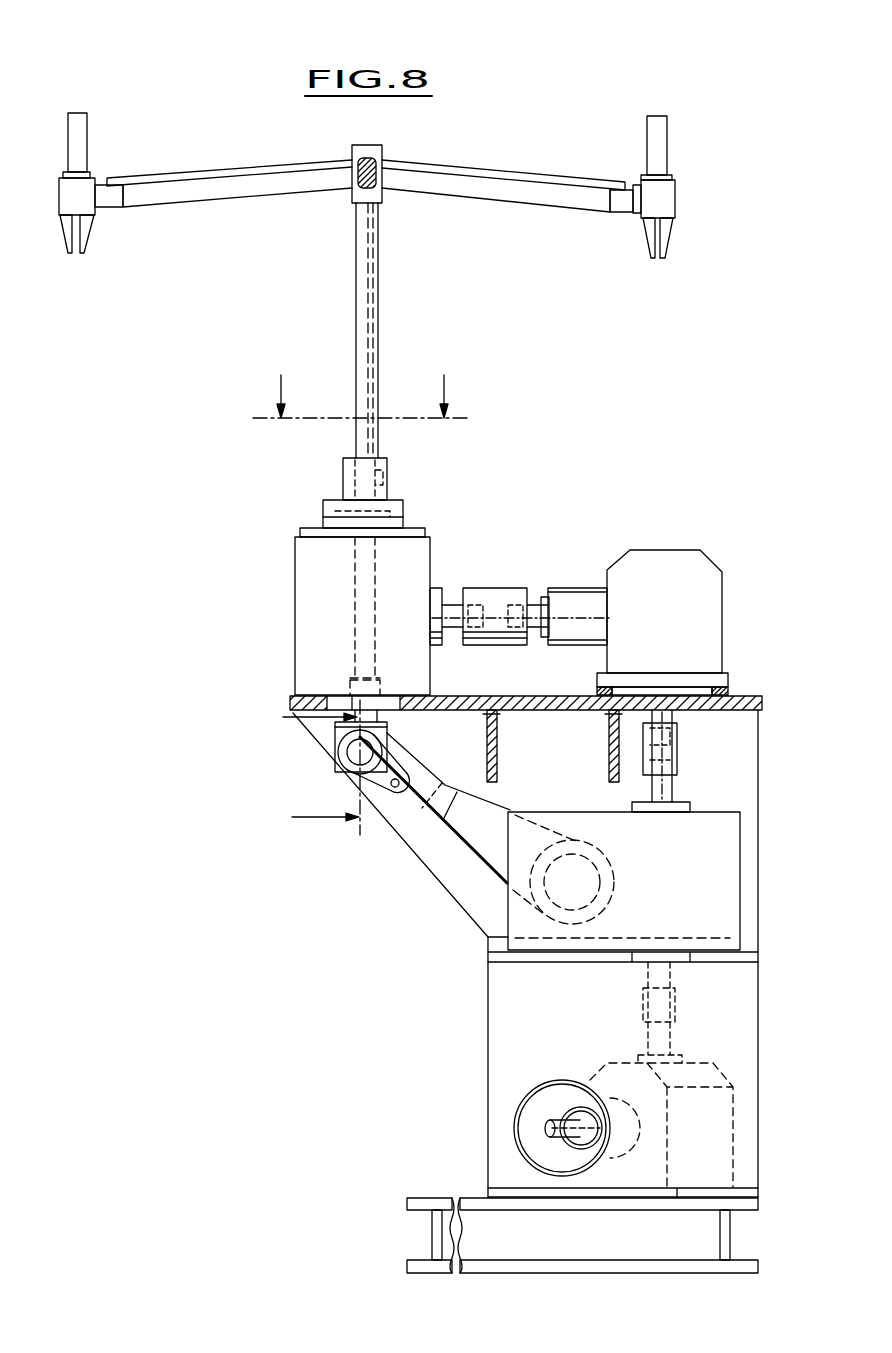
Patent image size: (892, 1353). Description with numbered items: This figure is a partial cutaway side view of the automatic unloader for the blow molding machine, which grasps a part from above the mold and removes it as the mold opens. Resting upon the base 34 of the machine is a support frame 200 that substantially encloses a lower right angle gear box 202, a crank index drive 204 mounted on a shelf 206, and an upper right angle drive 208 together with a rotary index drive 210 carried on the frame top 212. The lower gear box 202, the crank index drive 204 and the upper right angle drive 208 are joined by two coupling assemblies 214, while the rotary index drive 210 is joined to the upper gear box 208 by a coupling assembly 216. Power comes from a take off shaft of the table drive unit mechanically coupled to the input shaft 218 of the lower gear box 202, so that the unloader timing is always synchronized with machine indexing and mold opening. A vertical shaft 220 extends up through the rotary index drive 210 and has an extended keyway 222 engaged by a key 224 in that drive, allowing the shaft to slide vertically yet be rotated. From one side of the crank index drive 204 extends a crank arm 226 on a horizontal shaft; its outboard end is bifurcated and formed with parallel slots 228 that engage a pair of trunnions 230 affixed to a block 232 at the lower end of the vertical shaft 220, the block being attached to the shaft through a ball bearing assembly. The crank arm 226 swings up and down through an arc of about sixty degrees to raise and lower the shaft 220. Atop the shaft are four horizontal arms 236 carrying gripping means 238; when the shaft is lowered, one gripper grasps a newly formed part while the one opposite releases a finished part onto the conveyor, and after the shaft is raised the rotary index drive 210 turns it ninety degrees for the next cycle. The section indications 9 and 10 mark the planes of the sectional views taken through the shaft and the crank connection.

The support frame 200 is at (742, 698).
The lower right angle gear box 202 is at (712, 1143).
The crank index drive 204 is at (715, 880).
The shelf 206 is at (732, 958).
The upper right angle drive 208 is at (675, 565).
The rotary index drive 210 is at (420, 560).
The frame top 212 is at (560, 707).
The coupling assemblies 214 is at (677, 760).
The coupling assembly 216 is at (512, 592).
The input shaft 218 is at (552, 1130).
The vertical shaft 220 is at (370, 285).
The extended keyway 222 is at (374, 312).
The key 224 is at (387, 480).
The crank arm 226 is at (493, 847).
The parallel slots 228 is at (393, 787).
The trunnions 230 is at (350, 757).
The block 232 is at (387, 738).
The horizontal arms 236 is at (264, 140).
The gripping means 238 is at (85, 205).
The base 34 is at (590, 1273).
The section line 9- 9 is at (362, 396).
The section line 10- 10 is at (308, 767).